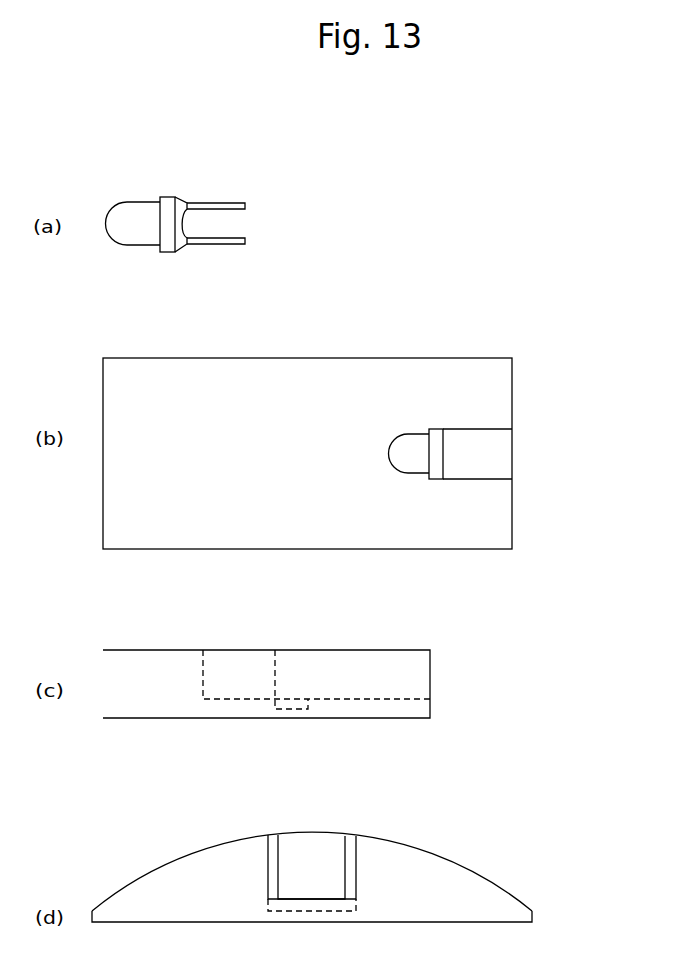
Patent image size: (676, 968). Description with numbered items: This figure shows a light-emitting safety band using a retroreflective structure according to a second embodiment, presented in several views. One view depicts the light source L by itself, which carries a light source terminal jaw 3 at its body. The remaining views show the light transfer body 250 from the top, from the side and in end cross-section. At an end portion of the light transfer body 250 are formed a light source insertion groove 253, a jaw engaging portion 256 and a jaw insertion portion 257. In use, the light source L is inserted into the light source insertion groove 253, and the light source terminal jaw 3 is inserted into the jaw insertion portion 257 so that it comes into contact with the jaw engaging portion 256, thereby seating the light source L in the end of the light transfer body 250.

The light source L is at (141, 187).
The light source terminal jaw 3 is at (167, 207).
The light transfer body 250 is at (483, 322).
The light source insertion groove 253 is at (408, 452).
The jaw insertion portion 257 is at (437, 451).
The jaw engaging portion 256 is at (423, 480).